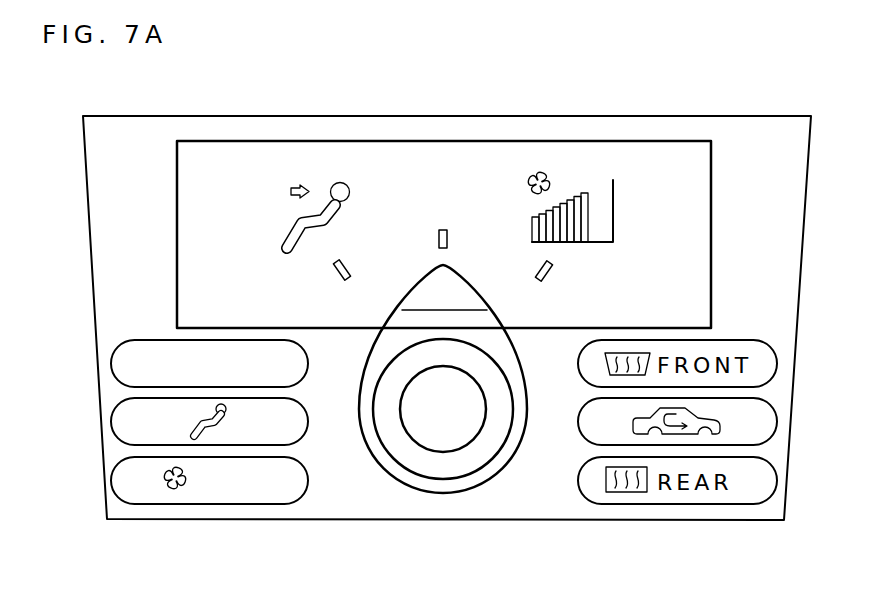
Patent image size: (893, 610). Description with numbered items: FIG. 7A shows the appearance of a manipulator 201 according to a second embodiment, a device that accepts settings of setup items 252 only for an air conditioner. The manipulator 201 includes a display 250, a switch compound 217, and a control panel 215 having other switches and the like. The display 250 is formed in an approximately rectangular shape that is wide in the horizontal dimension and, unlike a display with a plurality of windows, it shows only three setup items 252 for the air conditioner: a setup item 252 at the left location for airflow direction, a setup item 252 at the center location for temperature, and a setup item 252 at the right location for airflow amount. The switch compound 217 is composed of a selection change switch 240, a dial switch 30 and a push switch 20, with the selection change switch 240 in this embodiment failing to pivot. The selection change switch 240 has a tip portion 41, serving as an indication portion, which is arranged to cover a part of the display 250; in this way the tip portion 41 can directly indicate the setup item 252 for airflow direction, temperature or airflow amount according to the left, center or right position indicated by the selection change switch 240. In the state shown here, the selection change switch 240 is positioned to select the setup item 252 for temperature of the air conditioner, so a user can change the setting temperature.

The manipulator 201 is at (687, 116).
The display 250 is at (711, 183).
The setup item 252 is at (300, 156).
The tip portion 41 is at (420, 293).
The selection change switch 240 is at (487, 323).
The switch compound 217 is at (381, 472).
The push switch 20 is at (457, 382).
The dial switch 30 is at (488, 452).
The control panel 215 is at (115, 452).